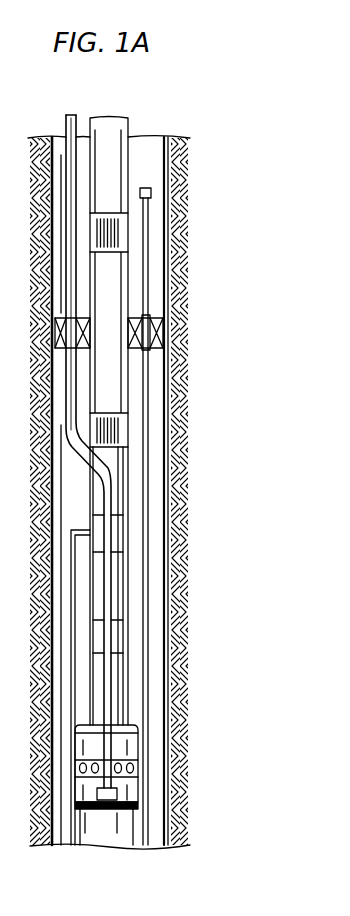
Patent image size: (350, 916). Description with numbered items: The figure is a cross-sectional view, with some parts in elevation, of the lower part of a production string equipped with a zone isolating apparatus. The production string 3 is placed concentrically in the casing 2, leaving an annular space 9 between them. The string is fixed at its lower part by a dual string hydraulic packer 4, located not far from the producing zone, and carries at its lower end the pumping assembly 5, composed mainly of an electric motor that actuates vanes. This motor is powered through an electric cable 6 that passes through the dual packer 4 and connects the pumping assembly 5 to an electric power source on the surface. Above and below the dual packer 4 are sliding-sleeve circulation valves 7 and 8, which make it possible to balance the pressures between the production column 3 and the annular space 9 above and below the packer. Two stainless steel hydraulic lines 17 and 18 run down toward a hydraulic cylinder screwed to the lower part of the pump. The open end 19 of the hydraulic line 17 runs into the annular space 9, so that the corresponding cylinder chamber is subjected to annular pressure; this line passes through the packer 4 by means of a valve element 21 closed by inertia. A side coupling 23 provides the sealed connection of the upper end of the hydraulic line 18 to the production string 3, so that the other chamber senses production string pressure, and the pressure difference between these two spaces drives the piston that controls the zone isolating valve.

The casing 2 is at (168, 190).
The production string 3 is at (118, 170).
The dual string hydraulic packer 4 is at (160, 329).
The pumping assembly 5 is at (127, 744).
The electric cable 6 is at (100, 478).
The circulation valve 7 is at (112, 238).
The circulation valve 8 is at (115, 428).
The annular space 9 is at (157, 299).
The hydraulic line 17 is at (143, 587).
The hydraulic line 18 is at (72, 605).
The open end 19 is at (152, 197).
The valve element 21 is at (150, 353).
The side coupling 23 is at (118, 533).